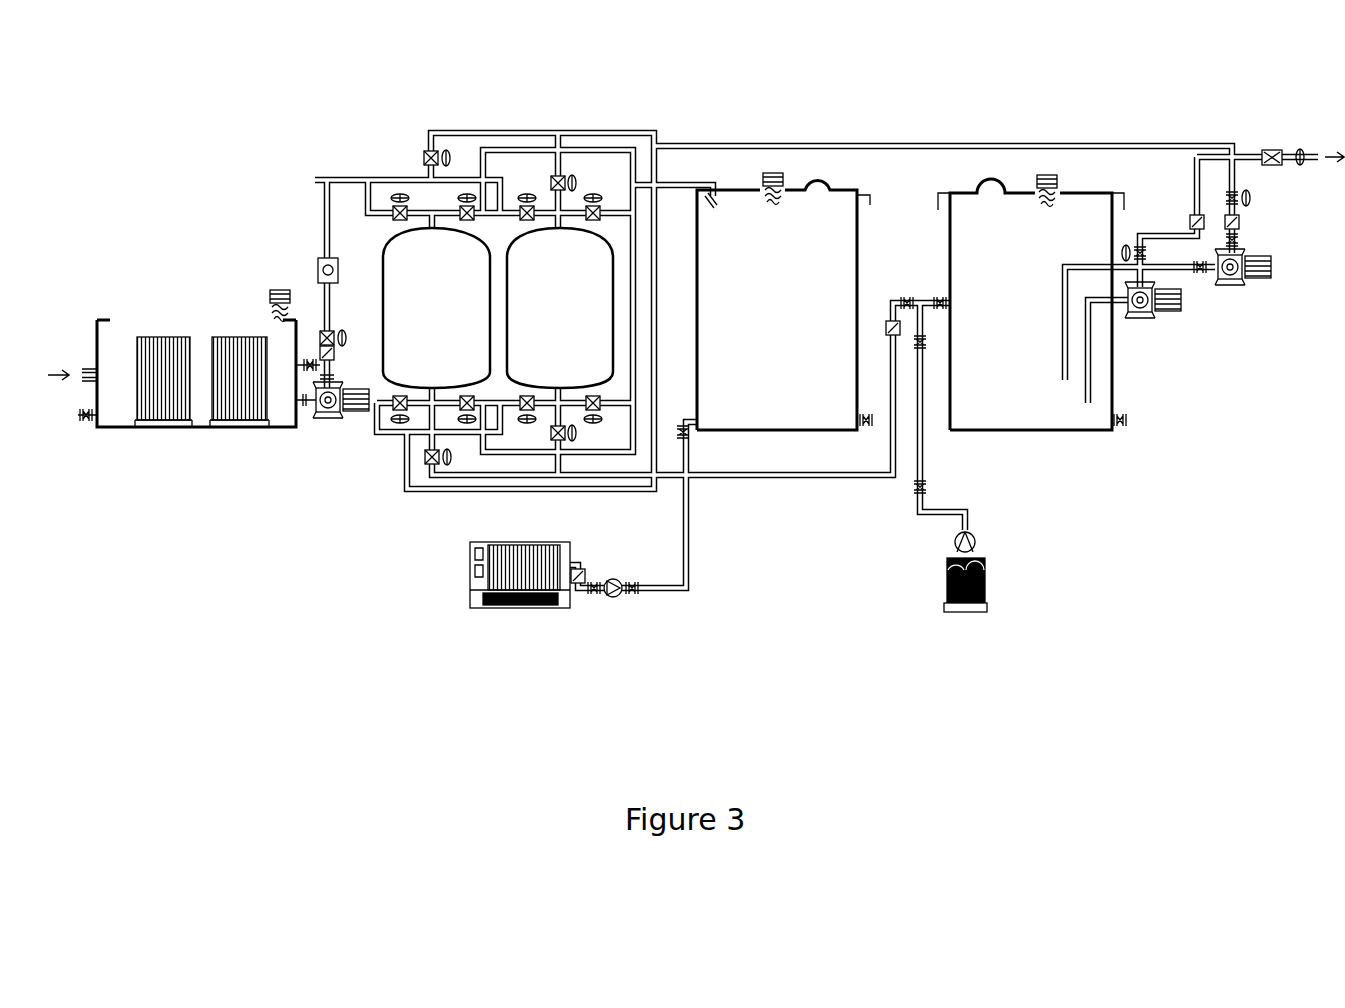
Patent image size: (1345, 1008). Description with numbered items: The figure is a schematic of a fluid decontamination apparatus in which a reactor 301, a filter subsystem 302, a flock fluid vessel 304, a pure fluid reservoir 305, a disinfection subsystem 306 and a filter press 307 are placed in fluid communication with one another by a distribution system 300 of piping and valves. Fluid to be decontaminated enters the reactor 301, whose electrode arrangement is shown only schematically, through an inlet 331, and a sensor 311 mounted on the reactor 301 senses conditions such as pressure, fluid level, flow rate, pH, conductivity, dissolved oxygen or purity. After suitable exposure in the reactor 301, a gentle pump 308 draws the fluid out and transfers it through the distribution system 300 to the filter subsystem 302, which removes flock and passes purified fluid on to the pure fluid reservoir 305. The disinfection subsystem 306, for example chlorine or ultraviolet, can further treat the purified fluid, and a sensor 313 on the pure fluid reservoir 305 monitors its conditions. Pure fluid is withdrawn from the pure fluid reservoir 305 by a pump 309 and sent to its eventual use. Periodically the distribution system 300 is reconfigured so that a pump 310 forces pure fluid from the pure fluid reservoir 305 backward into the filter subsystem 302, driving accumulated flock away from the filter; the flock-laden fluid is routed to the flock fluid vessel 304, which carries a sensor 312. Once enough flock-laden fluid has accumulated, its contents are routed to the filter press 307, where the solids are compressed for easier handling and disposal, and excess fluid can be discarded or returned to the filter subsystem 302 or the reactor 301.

The distribution system 300 is at (378, 162).
The reactor 301 is at (123, 432).
The inlet 331 is at (82, 370).
The sensor 311 is at (270, 300).
The pump 308 is at (320, 410).
The filter subsystem 302 is at (388, 372).
The flock fluid vessel 304 is at (777, 432).
The sensor 312 is at (770, 172).
The pure fluid reservoir 305 is at (1008, 432).
The sensor 313 is at (1040, 170).
The disinfection subsystem 306 is at (985, 573).
The filter press 307 is at (541, 610).
The pump 309 is at (1150, 310).
The pump 310 is at (1240, 282).